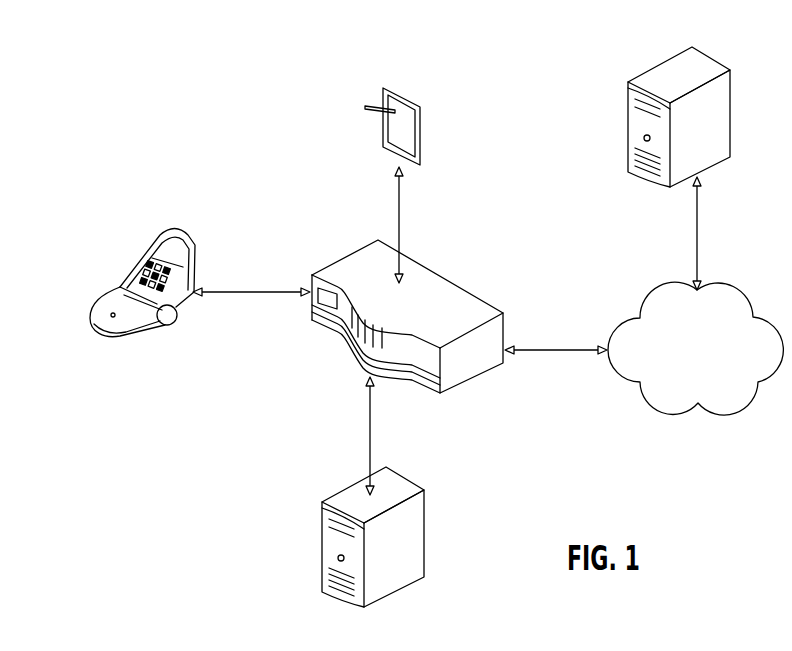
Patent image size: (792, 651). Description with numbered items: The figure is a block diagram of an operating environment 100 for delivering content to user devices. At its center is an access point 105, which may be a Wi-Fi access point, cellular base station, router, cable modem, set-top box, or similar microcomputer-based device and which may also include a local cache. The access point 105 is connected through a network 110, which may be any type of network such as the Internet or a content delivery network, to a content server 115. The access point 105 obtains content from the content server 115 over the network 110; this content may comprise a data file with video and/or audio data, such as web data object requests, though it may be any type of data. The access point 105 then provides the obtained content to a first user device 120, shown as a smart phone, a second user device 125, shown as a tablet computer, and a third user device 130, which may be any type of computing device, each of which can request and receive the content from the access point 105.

The operating environment 100 is at (217, 57).
The access point 105 is at (365, 255).
The network 110 is at (673, 283).
The content server 115 is at (710, 58).
The first user device 120 is at (110, 298).
The second user device 125 is at (407, 93).
The third user device 130 is at (402, 475).